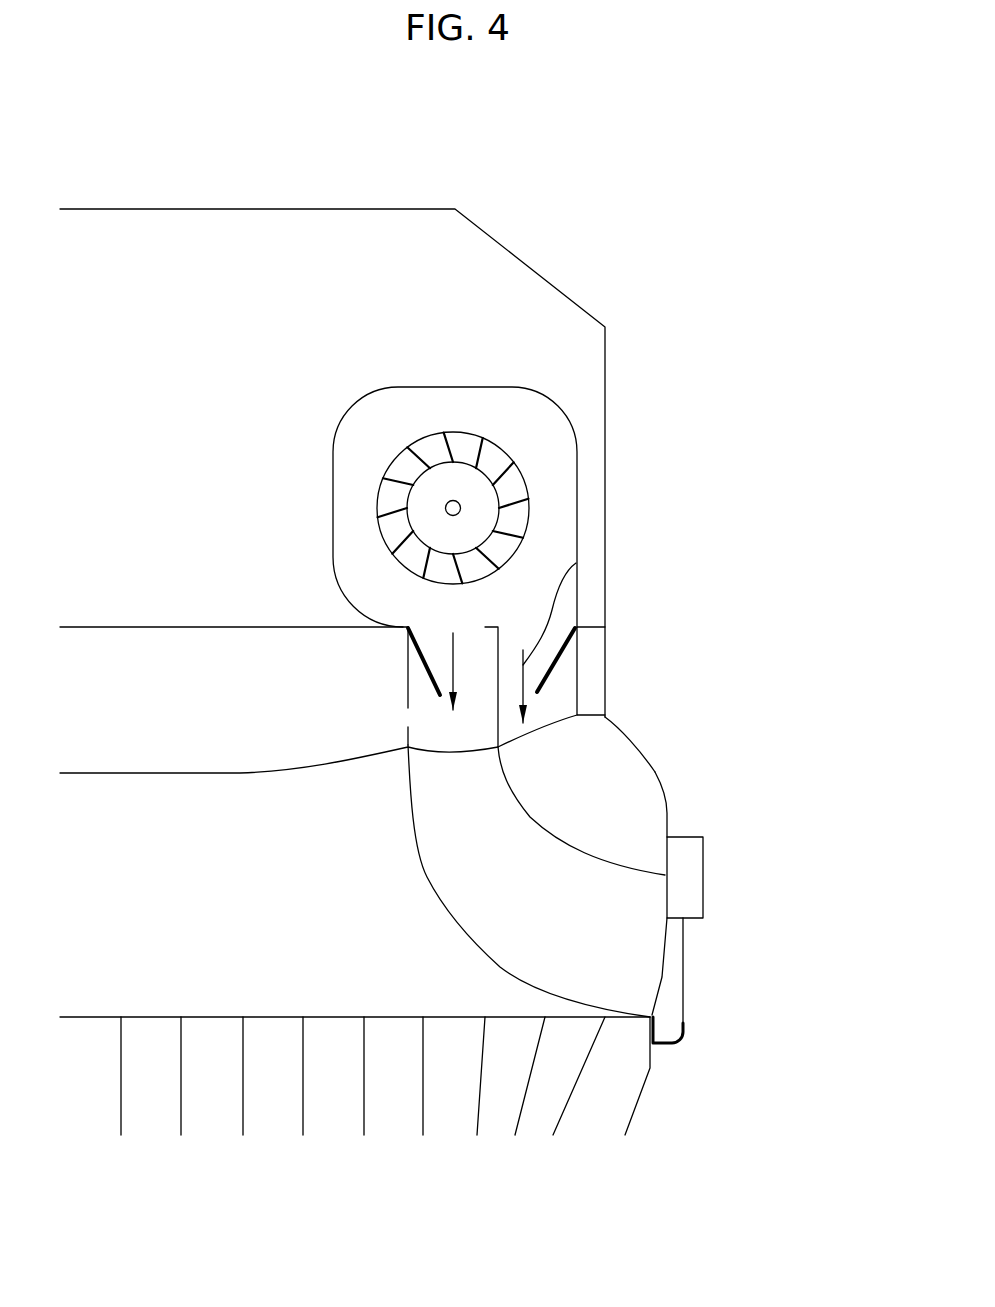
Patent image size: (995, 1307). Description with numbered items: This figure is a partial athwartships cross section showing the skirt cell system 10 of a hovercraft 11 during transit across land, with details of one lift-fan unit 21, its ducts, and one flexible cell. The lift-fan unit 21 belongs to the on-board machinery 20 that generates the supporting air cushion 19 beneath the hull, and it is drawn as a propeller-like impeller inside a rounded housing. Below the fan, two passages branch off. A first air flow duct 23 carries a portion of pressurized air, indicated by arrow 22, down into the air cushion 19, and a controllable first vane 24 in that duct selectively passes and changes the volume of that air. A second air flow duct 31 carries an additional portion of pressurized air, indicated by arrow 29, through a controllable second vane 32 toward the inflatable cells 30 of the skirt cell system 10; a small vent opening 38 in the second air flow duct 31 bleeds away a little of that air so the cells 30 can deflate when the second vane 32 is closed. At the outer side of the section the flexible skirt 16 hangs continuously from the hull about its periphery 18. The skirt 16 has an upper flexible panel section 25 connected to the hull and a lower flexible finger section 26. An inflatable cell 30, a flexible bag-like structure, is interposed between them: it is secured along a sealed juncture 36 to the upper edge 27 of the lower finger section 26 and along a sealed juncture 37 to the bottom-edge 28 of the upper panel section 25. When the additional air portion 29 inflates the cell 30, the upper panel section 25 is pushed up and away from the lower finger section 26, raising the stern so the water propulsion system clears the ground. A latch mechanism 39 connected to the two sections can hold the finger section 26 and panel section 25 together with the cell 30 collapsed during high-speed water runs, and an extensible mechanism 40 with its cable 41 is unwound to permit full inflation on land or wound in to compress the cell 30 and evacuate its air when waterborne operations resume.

The flexible inflatable skirt cell system 10 is at (688, 909).
The hovercraft 11 is at (150, 199).
The flexible skirt 16 is at (680, 909).
The periphery 18 is at (607, 718).
The air cushion 19 is at (375, 866).
The on-board machinery 20 is at (348, 500).
The lift-fan unit 21 is at (317, 413).
The portion of pressurized air 22 is at (574, 563).
The first air flow duct 23 is at (557, 690).
The controllable first vane 24 is at (576, 658).
The upper flexible panel section 25 is at (653, 762).
The lower flexible finger section 26 is at (557, 1085).
The upper edge 27 is at (730, 1026).
The bottom-edge 28 is at (581, 811).
The additional portion of pressurized air 29 is at (452, 676).
The inflatable cell 30 is at (512, 788).
The second air flow duct 31 is at (477, 732).
The controllable second vane 32 is at (426, 665).
The sealed juncture 36 is at (677, 1040).
The sealed juncture 37 is at (665, 873).
The vent opening 38 is at (407, 717).
The latch mechanism 39 is at (765, 877).
The extensible mechanism 40 is at (717, 880).
The cable 41 is at (671, 1047).